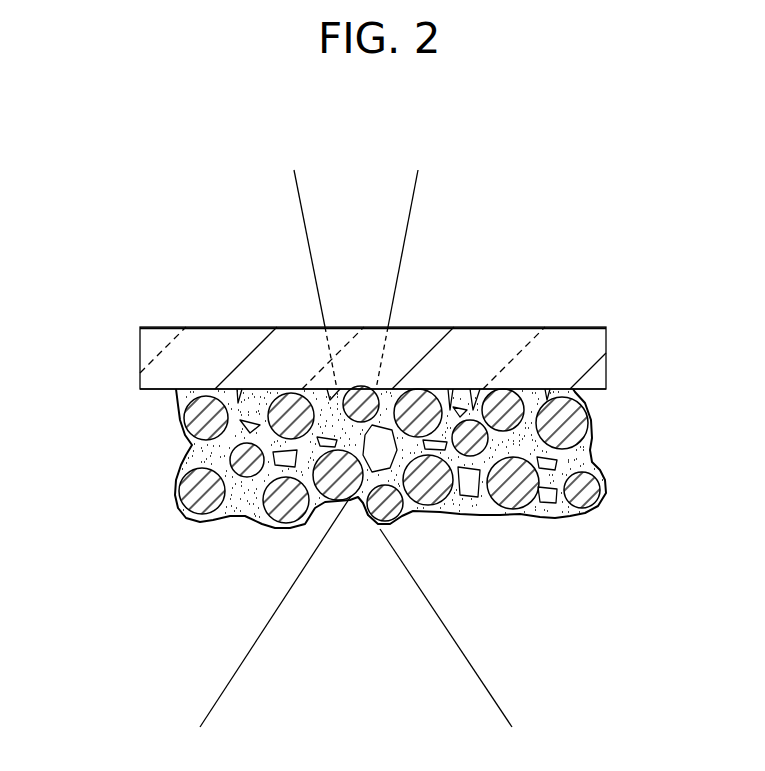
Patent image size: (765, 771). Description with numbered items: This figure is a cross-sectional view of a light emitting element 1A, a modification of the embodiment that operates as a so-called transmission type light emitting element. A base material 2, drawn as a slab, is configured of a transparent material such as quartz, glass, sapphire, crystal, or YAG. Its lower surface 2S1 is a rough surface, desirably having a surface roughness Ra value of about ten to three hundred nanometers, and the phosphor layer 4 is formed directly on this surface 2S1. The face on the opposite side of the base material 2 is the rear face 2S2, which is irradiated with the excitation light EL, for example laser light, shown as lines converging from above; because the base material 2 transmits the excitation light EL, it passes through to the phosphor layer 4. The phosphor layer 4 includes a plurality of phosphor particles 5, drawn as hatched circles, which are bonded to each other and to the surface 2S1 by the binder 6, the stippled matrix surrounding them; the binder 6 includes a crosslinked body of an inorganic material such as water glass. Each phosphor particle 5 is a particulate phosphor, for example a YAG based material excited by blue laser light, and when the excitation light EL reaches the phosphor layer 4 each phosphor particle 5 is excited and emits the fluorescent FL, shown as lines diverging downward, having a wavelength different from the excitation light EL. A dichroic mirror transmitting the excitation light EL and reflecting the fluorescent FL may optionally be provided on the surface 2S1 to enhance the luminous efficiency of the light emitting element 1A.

The light emitting element 1A is at (566, 160).
The base material 2 is at (580, 348).
The surface 2S1 is at (160, 390).
The rear face 2S2 is at (203, 327).
The phosphor layer 4 is at (626, 390).
The phosphor particle 5 is at (204, 510).
The binder 6 is at (545, 513).
The excitation light EL is at (387, 238).
The fluorescent FL is at (448, 667).